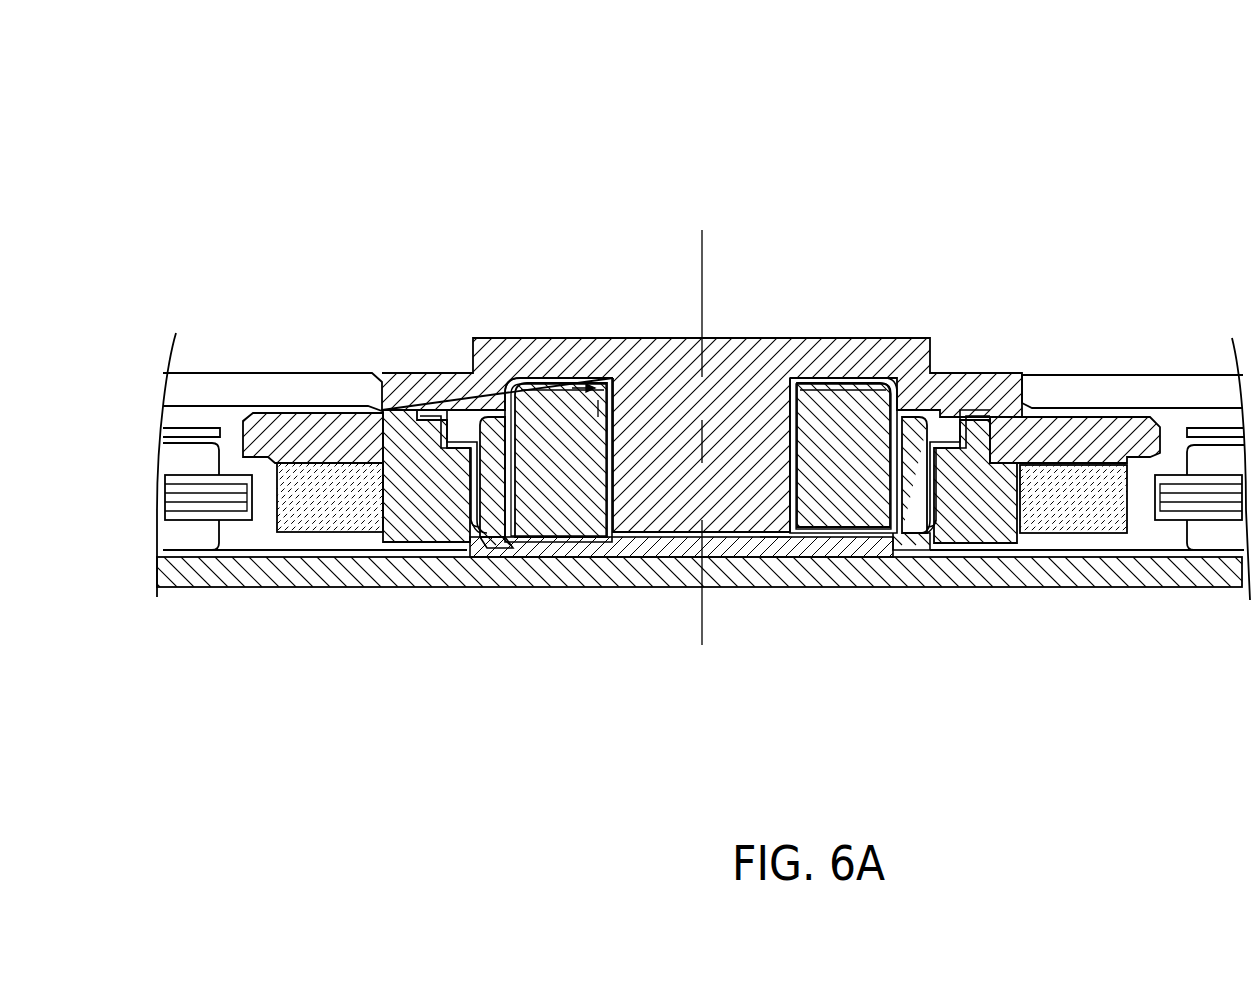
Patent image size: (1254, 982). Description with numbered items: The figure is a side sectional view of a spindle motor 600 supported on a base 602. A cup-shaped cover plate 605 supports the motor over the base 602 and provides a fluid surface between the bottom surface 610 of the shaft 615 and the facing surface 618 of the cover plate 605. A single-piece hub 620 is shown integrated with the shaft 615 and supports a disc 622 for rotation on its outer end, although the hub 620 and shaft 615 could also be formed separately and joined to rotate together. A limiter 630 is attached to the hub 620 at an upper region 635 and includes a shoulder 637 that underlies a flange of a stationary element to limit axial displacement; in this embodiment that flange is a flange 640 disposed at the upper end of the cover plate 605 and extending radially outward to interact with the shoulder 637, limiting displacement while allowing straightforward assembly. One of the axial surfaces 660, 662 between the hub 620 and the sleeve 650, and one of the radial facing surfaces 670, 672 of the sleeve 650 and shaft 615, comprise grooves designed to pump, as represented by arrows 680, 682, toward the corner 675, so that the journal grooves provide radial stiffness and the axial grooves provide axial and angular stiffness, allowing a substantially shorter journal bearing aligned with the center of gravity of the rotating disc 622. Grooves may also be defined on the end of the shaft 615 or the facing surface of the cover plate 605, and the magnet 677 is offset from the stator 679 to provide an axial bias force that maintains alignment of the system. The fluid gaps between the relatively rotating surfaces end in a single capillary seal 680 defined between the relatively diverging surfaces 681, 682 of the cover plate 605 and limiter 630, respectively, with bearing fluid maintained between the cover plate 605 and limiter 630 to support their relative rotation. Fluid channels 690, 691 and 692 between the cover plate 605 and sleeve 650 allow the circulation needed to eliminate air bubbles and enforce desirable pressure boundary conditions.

The spindle motor 600 is at (764, 72).
The base 602 is at (238, 572).
The cover plate 605 is at (510, 548).
The bottom surface of the shaft 610 is at (731, 533).
The shaft 615 is at (640, 510).
The facing surface of the cover plate 618 is at (778, 540).
The hub 620 is at (610, 353).
The disc 622 is at (1130, 387).
The limiter 630 is at (422, 417).
The upper region 635 is at (432, 480).
The shoulder 637 is at (478, 470).
The flange 640 is at (987, 383).
The sleeve 650 is at (953, 397).
The axial surface 660 is at (900, 397).
The axial surface 662 is at (877, 400).
The radial facing surface 670 is at (610, 375).
The radial facing surface 672 is at (543, 415).
The corner 675 is at (923, 347).
The magnet 677 is at (1093, 507).
The stator 679 is at (1213, 537).
The arrow / capillary seal 680 is at (543, 417).
The diverging surface of the cover plate 681 is at (500, 540).
The arrow / diverging surface of the limiter 682 is at (572, 387).
The fluid channel 690 is at (855, 535).
The fluid channel 691 is at (930, 527).
The fluid channel 692 is at (947, 395).